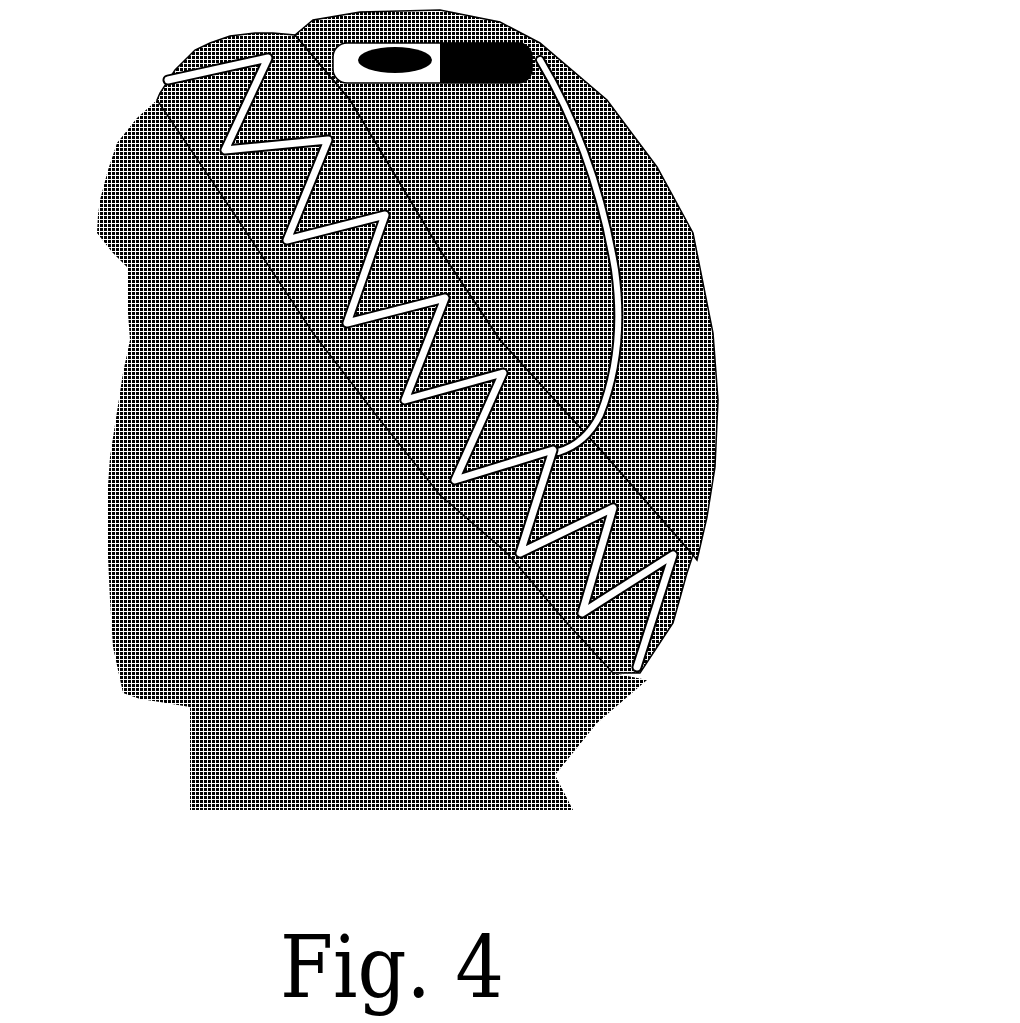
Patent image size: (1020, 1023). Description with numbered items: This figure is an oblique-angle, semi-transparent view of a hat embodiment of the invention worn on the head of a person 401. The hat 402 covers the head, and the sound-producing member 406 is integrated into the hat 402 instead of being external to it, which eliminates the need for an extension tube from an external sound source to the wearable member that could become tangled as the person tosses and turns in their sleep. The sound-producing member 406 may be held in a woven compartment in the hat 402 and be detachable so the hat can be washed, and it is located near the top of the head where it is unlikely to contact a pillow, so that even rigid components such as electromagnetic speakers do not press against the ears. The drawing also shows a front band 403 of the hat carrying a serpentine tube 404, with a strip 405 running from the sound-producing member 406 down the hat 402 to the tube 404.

The head of user 401 is at (110, 133).
The hat 402 is at (700, 377).
The front band of cap 403 is at (627, 533).
The serpentine tube 404 is at (652, 623).
The connecting strip 405 is at (607, 225).
The sound-producing member 406 is at (537, 47).